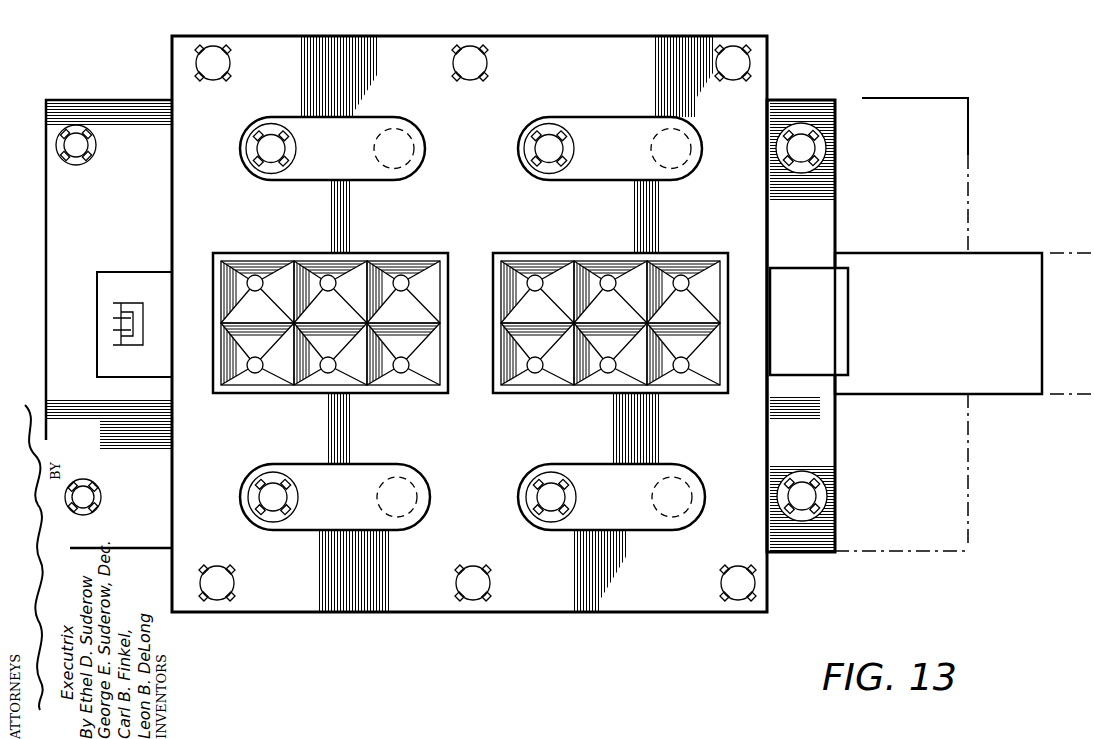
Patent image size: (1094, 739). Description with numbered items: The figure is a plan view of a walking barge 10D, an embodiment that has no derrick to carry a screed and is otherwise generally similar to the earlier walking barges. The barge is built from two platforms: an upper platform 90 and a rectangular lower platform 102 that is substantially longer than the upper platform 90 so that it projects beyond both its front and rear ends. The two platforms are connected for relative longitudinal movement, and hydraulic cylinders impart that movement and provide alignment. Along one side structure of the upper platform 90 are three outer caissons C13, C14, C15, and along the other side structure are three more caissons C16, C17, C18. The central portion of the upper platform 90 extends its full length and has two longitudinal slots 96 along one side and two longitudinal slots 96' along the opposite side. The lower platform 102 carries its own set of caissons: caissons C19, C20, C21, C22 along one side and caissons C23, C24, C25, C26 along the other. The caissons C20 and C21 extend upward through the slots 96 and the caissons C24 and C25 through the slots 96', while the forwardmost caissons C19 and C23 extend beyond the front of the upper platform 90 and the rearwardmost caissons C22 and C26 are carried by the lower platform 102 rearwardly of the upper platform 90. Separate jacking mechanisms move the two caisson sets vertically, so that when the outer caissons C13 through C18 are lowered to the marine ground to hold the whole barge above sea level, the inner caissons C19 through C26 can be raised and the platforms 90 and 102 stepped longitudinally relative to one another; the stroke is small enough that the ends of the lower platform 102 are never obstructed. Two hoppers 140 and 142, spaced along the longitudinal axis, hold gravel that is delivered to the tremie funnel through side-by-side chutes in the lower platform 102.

The walking barge 10D is at (547, 615).
The upper platform 90 is at (740, 99).
The lower platform 102 is at (808, 182).
The longitudinal slots 96 is at (471, 154).
The longitudinal slots 96' is at (472, 474).
The hopper 140 is at (660, 270).
The hopper 142 is at (407, 270).
The caisson C13 is at (735, 61).
The caisson C14 is at (470, 62).
The caisson C15 is at (213, 63).
The caisson C16 is at (738, 588).
The caisson C17 is at (476, 590).
The caisson C18 is at (221, 590).
The caisson C19 is at (808, 143).
The caisson C20 is at (549, 147).
The caisson C21 is at (268, 145).
The caisson C22 is at (77, 143).
The caisson C23 is at (810, 497).
The caisson C24 is at (560, 498).
The caisson C25 is at (283, 497).
The caisson C26 is at (84, 497).